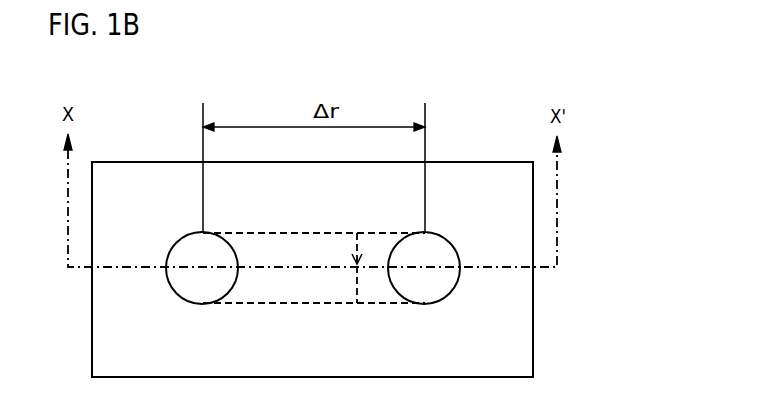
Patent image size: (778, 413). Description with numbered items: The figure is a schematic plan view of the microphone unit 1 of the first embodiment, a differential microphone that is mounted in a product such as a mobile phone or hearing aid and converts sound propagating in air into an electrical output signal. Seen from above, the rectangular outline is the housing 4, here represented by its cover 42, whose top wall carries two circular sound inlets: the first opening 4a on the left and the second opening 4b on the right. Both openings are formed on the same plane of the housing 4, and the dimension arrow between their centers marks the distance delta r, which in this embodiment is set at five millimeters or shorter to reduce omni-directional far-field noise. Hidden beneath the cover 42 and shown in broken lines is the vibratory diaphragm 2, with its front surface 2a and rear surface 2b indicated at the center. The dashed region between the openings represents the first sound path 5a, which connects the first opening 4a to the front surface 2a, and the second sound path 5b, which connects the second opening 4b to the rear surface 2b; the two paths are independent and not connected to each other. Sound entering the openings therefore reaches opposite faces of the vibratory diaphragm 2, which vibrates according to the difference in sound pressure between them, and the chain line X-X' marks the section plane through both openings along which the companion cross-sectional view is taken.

The microphone unit 1 is at (347, 57).
The vibratory diaphragm 2 is at (321, 274).
The front surface 2a is at (353, 261).
The rear surface 2b is at (374, 225).
The housing 4 is at (537, 293).
The cover 42 is at (373, 278).
The first opening 4a is at (192, 255).
The second opening 4b is at (435, 255).
The first sound path 5a is at (272, 287).
The second sound path 5b is at (375, 285).